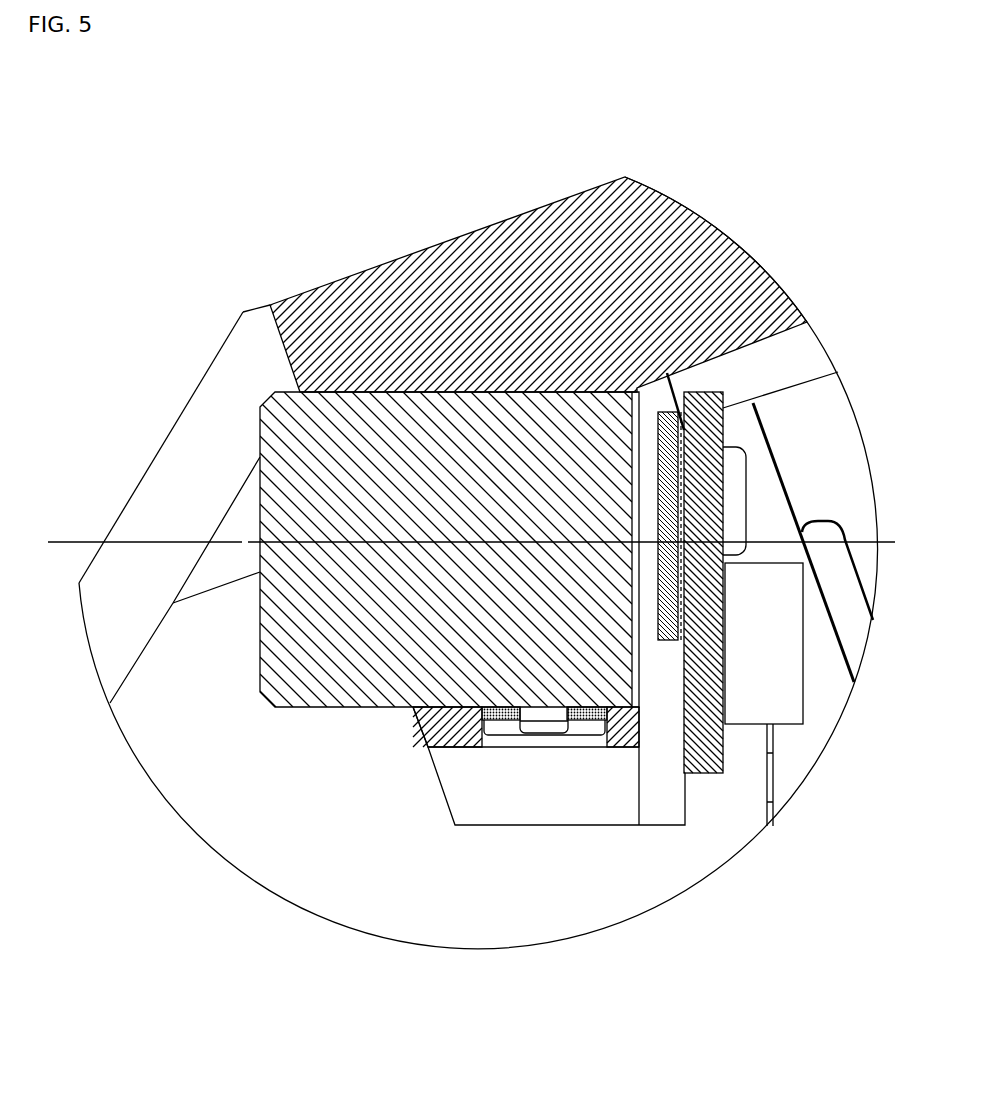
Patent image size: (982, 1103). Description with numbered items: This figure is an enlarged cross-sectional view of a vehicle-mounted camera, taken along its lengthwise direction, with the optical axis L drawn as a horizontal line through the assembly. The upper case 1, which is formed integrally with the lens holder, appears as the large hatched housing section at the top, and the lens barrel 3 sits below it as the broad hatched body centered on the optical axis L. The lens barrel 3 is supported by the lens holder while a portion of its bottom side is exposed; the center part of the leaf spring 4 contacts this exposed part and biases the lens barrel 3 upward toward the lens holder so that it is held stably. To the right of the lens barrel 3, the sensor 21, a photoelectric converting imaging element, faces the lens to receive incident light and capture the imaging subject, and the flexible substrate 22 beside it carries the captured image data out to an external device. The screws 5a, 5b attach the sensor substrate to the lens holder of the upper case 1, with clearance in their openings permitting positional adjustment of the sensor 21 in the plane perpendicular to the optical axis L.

The upper case 1 is at (513, 253).
The lens barrel 3 is at (355, 457).
The leaf spring 4 is at (503, 727).
The sensor 21 is at (665, 412).
The flexible substrate 22 is at (705, 391).
The screw 5a is at (786, 398).
The screw 5b is at (727, 463).
The optical axis L is at (78, 538).